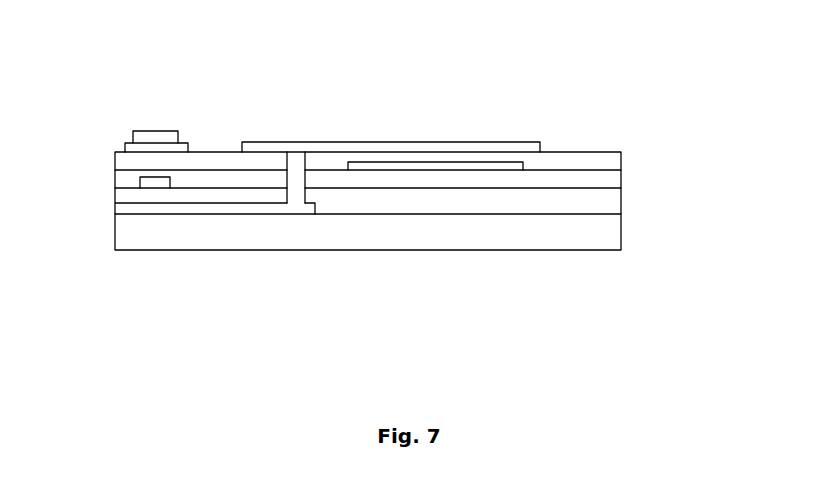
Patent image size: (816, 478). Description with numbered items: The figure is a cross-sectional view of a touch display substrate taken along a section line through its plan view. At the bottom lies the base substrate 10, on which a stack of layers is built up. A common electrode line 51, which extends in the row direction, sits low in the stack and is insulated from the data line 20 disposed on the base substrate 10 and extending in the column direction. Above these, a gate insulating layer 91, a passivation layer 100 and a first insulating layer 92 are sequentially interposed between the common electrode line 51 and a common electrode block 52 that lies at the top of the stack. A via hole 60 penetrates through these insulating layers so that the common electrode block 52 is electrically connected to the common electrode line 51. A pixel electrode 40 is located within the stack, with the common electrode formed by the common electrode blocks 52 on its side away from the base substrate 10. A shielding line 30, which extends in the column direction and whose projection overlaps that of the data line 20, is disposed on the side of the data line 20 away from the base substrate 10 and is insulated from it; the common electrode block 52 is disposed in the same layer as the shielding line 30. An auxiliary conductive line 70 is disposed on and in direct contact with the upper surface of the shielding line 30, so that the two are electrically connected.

The base substrate 10 is at (621, 242).
The data line 20 is at (140, 180).
The shielding line 30 is at (128, 147).
The pixel electrode 40 is at (440, 163).
The common electrode line 51 is at (260, 209).
The common electrode block 52 is at (480, 142).
The via hole 60 is at (293, 170).
The auxiliary conductive line 70 is at (152, 138).
The gate insulating layer 91 is at (621, 198).
The first insulating layer 92 is at (621, 152).
The passivation layer 100 is at (621, 172).